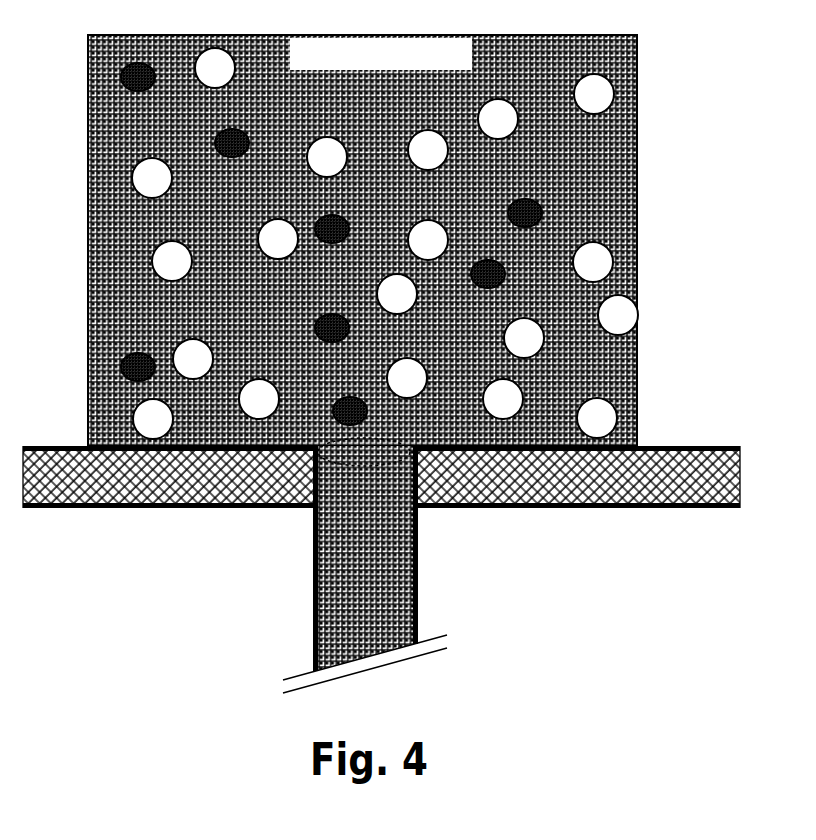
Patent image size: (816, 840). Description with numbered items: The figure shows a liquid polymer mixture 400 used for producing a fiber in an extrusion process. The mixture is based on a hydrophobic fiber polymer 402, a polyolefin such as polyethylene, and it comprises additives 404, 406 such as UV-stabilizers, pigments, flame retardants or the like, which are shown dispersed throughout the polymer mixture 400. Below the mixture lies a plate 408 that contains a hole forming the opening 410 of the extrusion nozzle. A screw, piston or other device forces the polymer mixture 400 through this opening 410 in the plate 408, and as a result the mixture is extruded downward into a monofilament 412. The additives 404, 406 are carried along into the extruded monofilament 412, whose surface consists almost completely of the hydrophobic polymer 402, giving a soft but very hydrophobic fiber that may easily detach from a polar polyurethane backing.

The polymer mixture 400 is at (472, 35).
The hydrophobic fiber polymer 402 is at (582, 62).
The additive 404 is at (137, 77).
The additive 406 is at (592, 262).
The plate 408 is at (604, 478).
The opening of extrusion nozzle 410 is at (327, 463).
The extruded monofilament 412 is at (333, 600).